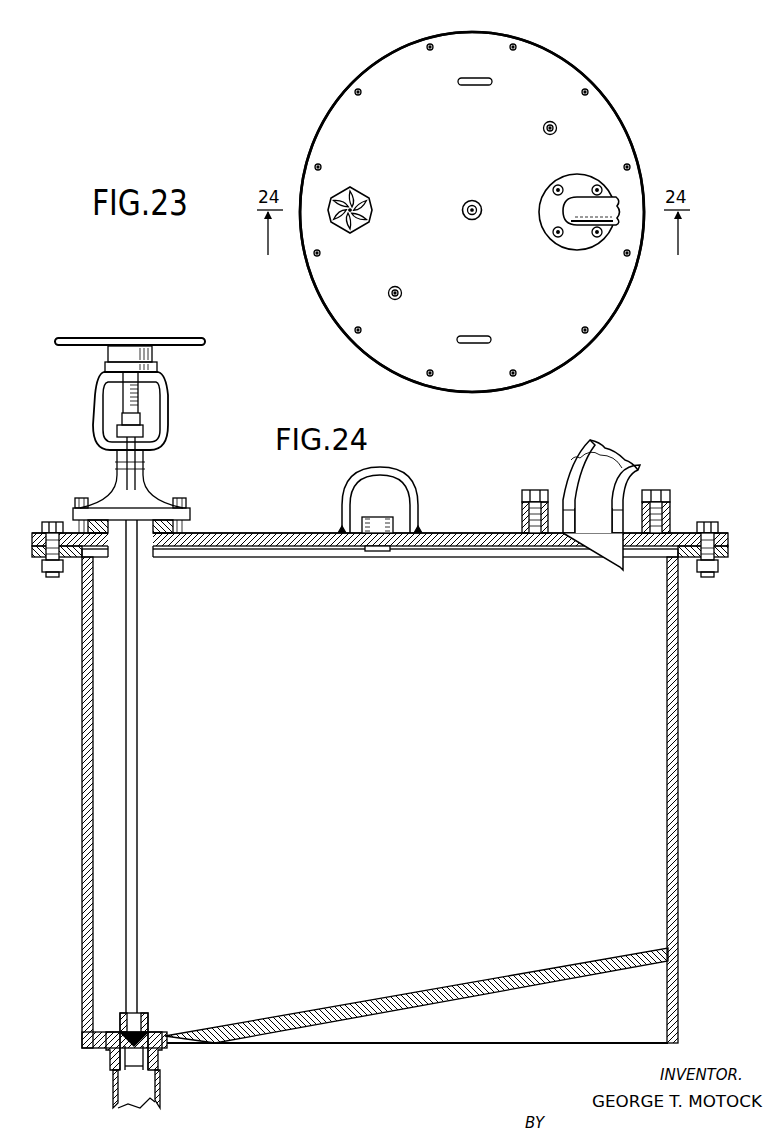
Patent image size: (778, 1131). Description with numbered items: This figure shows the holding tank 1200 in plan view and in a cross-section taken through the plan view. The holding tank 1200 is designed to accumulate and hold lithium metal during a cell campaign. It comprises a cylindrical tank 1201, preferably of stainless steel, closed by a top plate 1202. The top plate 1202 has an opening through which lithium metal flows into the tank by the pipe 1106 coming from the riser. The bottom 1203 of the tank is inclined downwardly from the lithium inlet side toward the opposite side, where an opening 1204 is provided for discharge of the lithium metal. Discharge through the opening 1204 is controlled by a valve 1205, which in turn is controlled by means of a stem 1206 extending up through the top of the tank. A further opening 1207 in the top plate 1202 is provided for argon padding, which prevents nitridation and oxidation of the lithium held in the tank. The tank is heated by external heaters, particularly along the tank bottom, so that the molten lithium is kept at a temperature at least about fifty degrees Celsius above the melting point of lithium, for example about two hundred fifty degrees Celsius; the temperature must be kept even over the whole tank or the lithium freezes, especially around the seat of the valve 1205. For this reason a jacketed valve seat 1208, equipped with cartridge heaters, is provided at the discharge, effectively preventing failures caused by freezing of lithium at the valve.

In FIG. 23, the holding tank 1200 is at (312, 112).
In FIG. 24, the holding tank 1200 is at (253, 482).
In FIG. 24, the cylindrical tank 1201 is at (680, 672).
In FIG. 23, the top plate 1202 is at (602, 108).
In FIG. 24, the top plate 1202 is at (277, 514).
In FIG. 24, the bottom 1203 is at (385, 1010).
In FIG. 24, the opening 1204 is at (140, 1070).
In FIG. 24, the valve 1205 is at (150, 1020).
In FIG. 23, the stem 1206 is at (350, 210).
In FIG. 24, the stem 1206 is at (138, 400).
In FIG. 23, the opening 1207 is at (468, 219).
In FIG. 24, the opening 1207 is at (383, 516).
In FIG. 24, the jacketed valve seat 1208 is at (110, 1055).
In FIG. 23, the pipe 1106 is at (580, 200).
In FIG. 24, the pipe 1106 is at (582, 476).